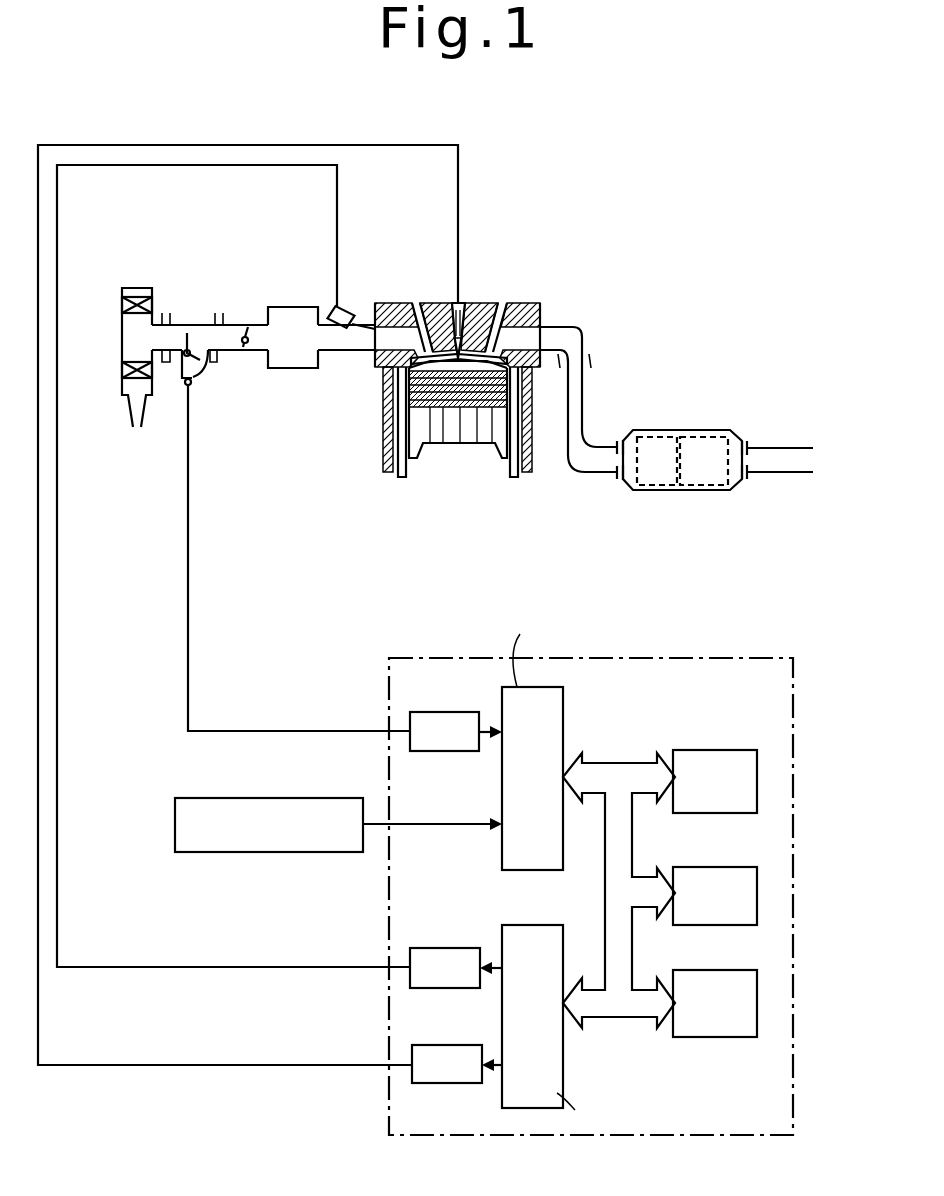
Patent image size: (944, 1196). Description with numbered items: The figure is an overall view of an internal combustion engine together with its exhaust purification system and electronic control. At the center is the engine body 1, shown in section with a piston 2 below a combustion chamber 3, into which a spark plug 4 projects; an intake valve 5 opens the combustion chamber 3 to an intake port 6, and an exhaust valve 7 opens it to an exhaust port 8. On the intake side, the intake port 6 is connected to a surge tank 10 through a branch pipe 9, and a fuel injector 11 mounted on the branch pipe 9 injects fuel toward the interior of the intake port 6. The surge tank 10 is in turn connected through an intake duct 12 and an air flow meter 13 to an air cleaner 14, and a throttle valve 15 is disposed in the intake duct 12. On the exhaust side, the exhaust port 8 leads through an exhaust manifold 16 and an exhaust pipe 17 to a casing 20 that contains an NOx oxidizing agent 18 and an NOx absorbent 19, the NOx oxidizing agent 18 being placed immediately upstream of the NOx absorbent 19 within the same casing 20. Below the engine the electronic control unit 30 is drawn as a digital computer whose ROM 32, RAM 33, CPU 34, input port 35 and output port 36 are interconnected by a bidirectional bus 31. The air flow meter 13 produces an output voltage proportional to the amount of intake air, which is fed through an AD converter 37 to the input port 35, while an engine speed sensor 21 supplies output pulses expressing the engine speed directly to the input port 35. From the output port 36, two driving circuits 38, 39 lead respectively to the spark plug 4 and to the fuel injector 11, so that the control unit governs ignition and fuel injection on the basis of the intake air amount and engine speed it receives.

The engine body 1 is at (538, 457).
The piston 2 is at (473, 438).
The combustion chamber 3 is at (455, 368).
The spark plug 4 is at (467, 317).
The intake valve 5 is at (401, 300).
The intake port 6 is at (383, 305).
The exhaust valve 7 is at (500, 300).
The exhaust port 8 is at (530, 337).
The branch pipe 9 is at (333, 352).
The surge tank 10 is at (288, 368).
The fuel injector 11 is at (345, 305).
The intake duct 12 is at (227, 323).
The air flow meter 13 is at (188, 323).
The air cleaner 14 is at (140, 288).
The throttle valve 15 is at (250, 330).
The exhaust manifold 16 is at (573, 328).
The exhaust pipe 17 is at (590, 390).
The NOx oxidizing agent 18 is at (648, 435).
The NOx absorbent 19 is at (712, 430).
The casing 20 is at (678, 492).
The engine speed sensor 21 is at (267, 798).
The electronic control unit 30 is at (795, 685).
The bidirectional bus 31 is at (626, 763).
The ROM 32 is at (738, 750).
The RAM 33 is at (733, 866).
The CPU 34 is at (737, 970).
The input port 35 is at (563, 716).
The output port 36 is at (565, 1077).
The AD converter 37 is at (449, 712).
The driving circuit 38 is at (458, 1045).
The driving circuit 39 is at (458, 948).